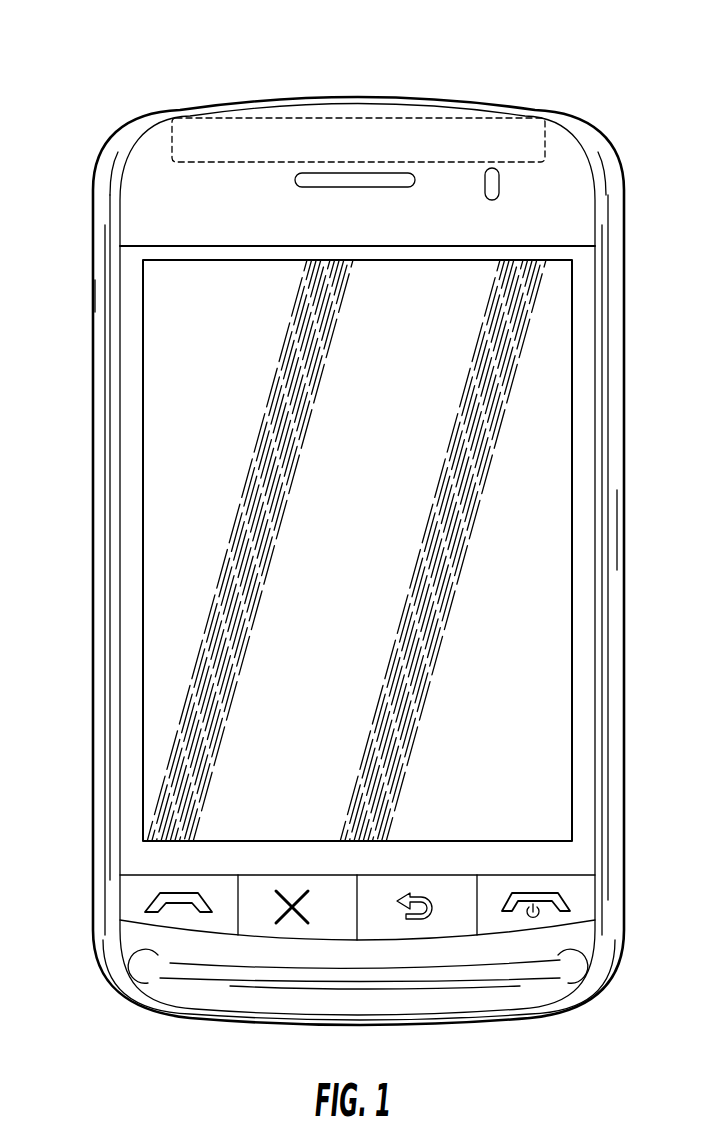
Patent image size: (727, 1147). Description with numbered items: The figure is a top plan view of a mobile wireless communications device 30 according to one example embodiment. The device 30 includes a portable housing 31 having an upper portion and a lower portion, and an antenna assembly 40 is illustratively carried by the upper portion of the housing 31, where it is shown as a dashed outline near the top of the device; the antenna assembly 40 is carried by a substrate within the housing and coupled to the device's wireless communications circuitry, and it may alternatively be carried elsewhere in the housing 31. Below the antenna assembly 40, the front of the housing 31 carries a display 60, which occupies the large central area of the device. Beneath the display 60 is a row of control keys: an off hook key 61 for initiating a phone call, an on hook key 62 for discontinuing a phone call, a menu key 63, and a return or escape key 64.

The mobile wireless communications device 30 is at (570, 64).
The housing 31 is at (93, 340).
The antenna assembly 40 is at (214, 114).
The display 60 is at (530, 569).
The off hook key 61 is at (140, 908).
The on hook key 62 is at (558, 913).
The menu key 63 is at (290, 928).
The return or escape key 64 is at (410, 928).